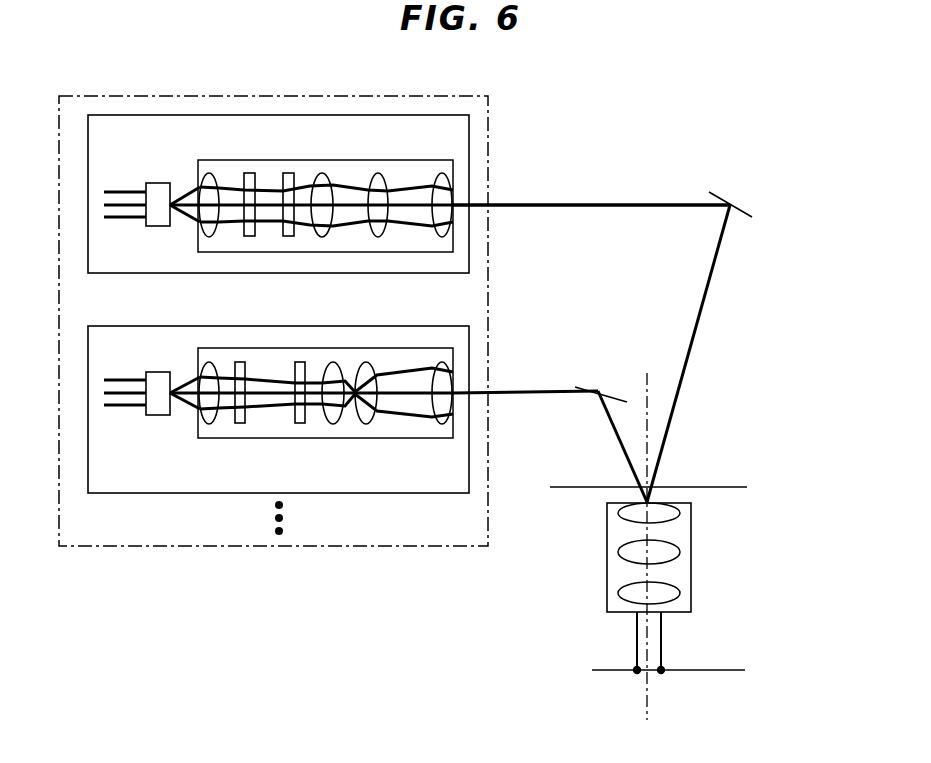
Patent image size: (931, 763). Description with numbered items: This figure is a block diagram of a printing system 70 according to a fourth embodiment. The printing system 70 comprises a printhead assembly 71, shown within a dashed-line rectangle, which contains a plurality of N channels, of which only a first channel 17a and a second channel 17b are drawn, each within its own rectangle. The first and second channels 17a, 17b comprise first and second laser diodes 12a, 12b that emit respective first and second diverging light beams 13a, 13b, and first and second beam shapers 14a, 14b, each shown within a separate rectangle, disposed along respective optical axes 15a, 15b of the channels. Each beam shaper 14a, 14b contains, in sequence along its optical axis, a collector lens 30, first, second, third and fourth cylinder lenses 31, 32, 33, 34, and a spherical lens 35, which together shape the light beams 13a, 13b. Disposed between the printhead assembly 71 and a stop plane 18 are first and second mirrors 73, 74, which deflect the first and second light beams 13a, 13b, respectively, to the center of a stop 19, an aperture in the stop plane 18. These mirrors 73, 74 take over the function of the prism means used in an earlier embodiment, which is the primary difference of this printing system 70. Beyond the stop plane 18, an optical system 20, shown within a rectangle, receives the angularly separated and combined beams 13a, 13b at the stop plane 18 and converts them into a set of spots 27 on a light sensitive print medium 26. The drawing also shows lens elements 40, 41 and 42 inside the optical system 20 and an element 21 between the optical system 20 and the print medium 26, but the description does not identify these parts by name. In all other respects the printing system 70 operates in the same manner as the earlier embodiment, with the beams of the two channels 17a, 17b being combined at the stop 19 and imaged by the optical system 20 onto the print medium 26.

The printing system 70 is at (655, 91).
The printhead assembly 71 is at (340, 96).
The first channel 17a is at (132, 274).
The second channel 17b is at (131, 493).
The first laser diode 12a is at (157, 190).
The second laser diode 12b is at (158, 403).
The first diverging light beam 13a is at (177, 192).
The second diverging light beam 13b is at (183, 444).
The first beam shaper 14a is at (343, 165).
The second beam shaper 14b is at (322, 430).
The collector lens 30 is at (215, 238).
The first cylinder lens 31 is at (250, 237).
The second cylinder lens 32 is at (290, 237).
The third cylinder lens 33 is at (325, 238).
The fourth cylinder lens 34 is at (379, 238).
The spherical lens 35 is at (440, 238).
The optical axis 15a is at (580, 204).
The optical axis 15b is at (546, 396).
The first mirror 73 is at (737, 212).
The second mirror 74 is at (598, 389).
The stop plane 18 is at (576, 487).
The stop 19 is at (659, 484).
The optical system 20 is at (606, 556).
The first condensing lens 40 is at (667, 512).
The second condensing lens 41 is at (667, 550).
The third condensing lens 42 is at (667, 592).
The optical fiber 21 is at (651, 645).
The print medium 26 is at (718, 670).
The spots 27 is at (660, 671).